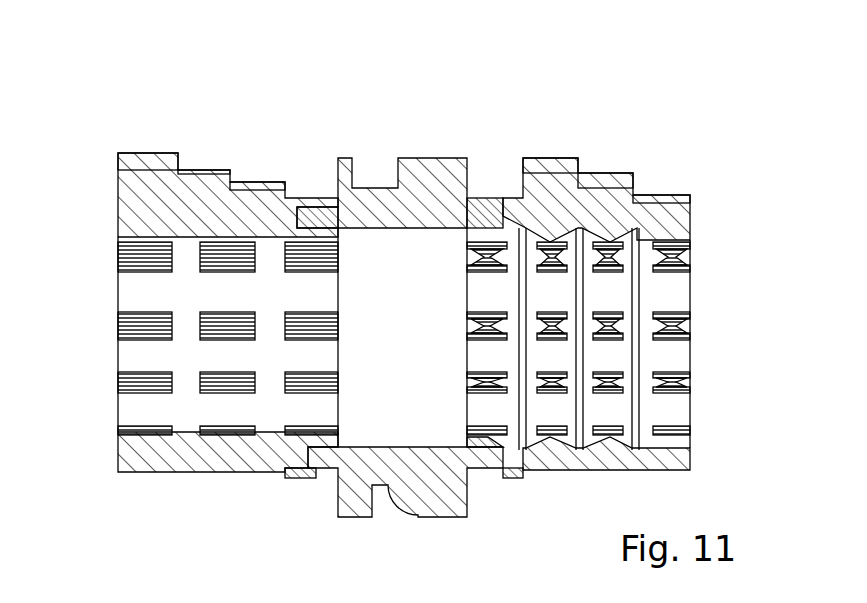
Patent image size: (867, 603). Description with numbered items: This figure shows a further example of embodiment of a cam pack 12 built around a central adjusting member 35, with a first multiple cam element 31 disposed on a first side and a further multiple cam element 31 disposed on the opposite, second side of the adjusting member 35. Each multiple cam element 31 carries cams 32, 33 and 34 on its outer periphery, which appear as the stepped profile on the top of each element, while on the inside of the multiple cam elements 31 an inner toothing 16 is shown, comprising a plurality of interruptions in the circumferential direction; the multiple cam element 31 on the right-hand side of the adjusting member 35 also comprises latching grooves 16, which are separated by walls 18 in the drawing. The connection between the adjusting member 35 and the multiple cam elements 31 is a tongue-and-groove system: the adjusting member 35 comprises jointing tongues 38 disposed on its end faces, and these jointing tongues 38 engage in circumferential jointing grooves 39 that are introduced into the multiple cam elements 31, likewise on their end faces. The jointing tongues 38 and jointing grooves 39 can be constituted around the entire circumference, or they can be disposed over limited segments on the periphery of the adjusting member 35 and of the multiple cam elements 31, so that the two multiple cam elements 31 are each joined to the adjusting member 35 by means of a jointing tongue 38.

The cam pack 12 is at (88, 134).
The inner toothing 16 is at (125, 328).
The separating walls 18 is at (497, 437).
The multiple cam element 31 is at (117, 212).
The cam 32 is at (148, 153).
The cam 33 is at (205, 170).
The cam 34 is at (260, 182).
The adjusting member 35 is at (420, 158).
The jointing tongue 38 is at (315, 207).
The jointing groove 39 is at (315, 478).